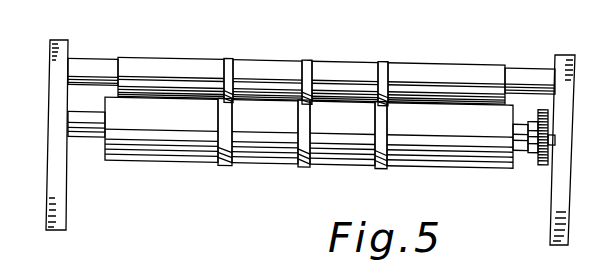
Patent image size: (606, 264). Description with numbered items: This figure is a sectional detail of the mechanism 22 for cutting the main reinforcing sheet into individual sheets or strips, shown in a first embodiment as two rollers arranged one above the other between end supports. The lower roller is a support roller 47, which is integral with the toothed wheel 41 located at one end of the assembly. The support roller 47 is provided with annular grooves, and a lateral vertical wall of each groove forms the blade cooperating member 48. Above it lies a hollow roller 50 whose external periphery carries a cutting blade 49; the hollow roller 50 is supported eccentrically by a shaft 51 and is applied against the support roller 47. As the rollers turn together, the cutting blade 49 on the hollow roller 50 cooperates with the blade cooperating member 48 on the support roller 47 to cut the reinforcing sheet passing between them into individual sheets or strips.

The mechanism for cutting the main reinforcing sheet 22 is at (249, 42).
The toothed wheel 41 is at (540, 165).
The support roller 47 is at (145, 147).
The blade cooperating member 48 is at (225, 165).
The cutting blade 49 is at (385, 62).
The hollow roller 50 is at (445, 75).
The shaft 51 is at (93, 66).